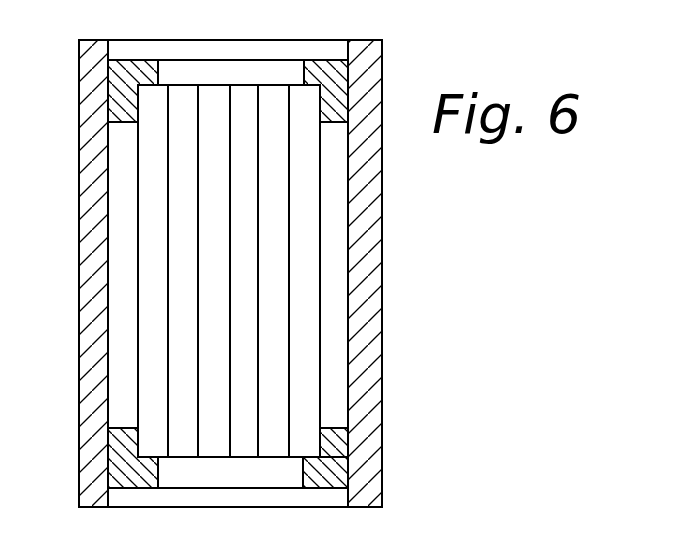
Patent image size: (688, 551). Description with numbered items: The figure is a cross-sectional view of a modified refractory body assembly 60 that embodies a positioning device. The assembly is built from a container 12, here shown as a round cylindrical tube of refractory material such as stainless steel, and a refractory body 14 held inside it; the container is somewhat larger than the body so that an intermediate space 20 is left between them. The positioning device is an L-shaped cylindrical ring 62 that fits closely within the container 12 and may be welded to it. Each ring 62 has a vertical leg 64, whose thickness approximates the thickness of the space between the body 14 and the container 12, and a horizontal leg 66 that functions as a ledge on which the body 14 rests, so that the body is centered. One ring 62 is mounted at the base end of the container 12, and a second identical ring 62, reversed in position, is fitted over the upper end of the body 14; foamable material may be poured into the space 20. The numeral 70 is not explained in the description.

The battery cell assembly 60 is at (405, 57).
The container 12 is at (368, 223).
The refractory body 14 is at (184, 209).
The intermediate space 20 is at (333, 285).
The L-shaped cylindrical ring 62 is at (128, 68).
The vertical leg 64 is at (332, 443).
The horizontal leg 66 is at (316, 463).
The element 70 is at (596, 544).